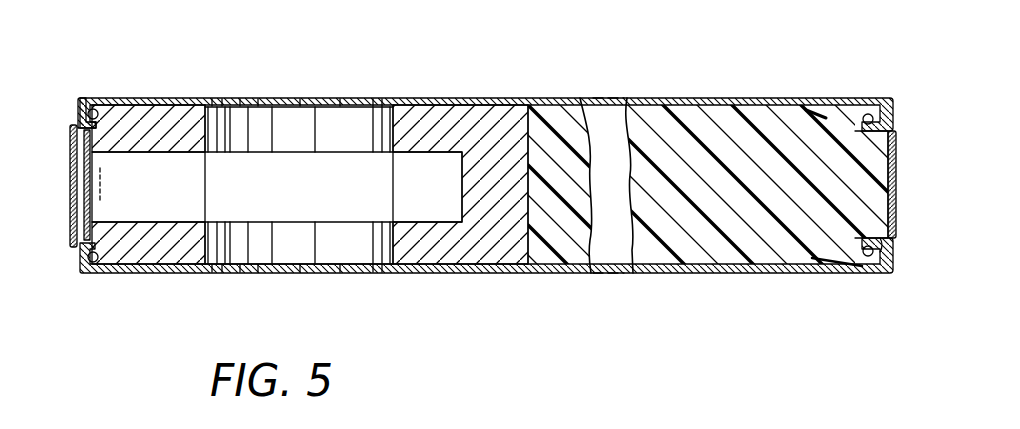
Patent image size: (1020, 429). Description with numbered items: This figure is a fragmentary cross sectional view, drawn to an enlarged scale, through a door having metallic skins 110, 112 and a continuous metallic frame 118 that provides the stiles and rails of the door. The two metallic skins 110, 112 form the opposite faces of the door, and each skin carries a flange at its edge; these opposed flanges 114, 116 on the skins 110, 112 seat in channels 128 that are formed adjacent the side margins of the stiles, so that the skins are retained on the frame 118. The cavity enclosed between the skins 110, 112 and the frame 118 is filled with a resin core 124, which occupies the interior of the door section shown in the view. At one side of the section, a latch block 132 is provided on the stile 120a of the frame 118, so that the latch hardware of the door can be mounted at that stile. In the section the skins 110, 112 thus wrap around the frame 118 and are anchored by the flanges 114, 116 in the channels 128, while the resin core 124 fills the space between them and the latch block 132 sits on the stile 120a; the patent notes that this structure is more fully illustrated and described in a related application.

The metallic skin 110 is at (718, 274).
The metallic skin 112 is at (780, 98).
The flange 114 is at (891, 270).
The flange 116 is at (893, 128).
The continuous metallic frame 118 is at (65, 152).
The stile 120a is at (96, 226).
The resin core 124 is at (780, 235).
The channel 128 is at (854, 112).
The latch block 132 is at (468, 237).